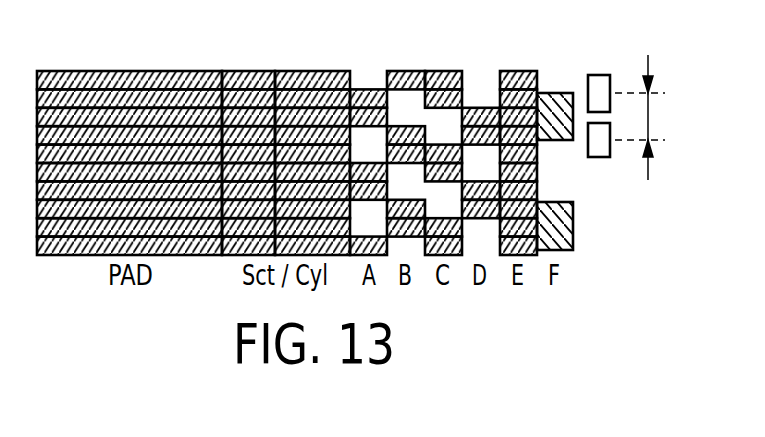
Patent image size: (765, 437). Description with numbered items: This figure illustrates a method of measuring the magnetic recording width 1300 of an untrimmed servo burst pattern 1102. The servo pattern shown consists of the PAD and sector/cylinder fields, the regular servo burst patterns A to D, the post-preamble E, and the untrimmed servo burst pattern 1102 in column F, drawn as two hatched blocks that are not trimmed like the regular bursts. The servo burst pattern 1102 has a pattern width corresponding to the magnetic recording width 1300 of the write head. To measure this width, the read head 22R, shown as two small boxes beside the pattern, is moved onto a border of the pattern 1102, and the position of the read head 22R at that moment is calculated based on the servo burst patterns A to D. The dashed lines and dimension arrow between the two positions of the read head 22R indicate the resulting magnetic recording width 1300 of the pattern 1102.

The servo burst pattern (F) 1102 is at (553, 93).
The read head 22R is at (600, 75).
The magnetic recording width 1300 is at (661, 117).